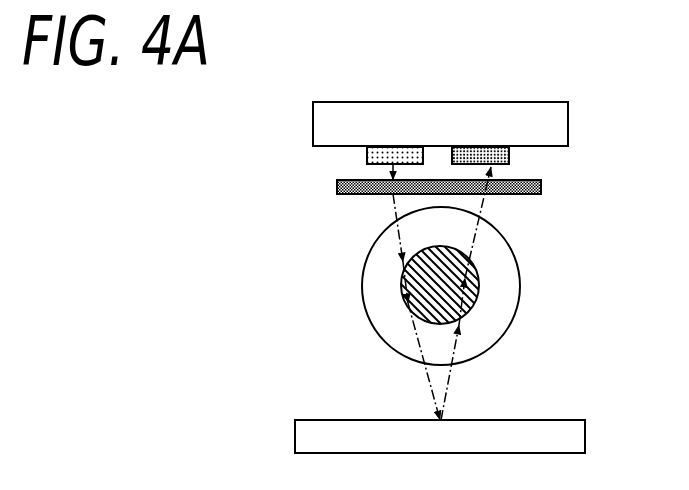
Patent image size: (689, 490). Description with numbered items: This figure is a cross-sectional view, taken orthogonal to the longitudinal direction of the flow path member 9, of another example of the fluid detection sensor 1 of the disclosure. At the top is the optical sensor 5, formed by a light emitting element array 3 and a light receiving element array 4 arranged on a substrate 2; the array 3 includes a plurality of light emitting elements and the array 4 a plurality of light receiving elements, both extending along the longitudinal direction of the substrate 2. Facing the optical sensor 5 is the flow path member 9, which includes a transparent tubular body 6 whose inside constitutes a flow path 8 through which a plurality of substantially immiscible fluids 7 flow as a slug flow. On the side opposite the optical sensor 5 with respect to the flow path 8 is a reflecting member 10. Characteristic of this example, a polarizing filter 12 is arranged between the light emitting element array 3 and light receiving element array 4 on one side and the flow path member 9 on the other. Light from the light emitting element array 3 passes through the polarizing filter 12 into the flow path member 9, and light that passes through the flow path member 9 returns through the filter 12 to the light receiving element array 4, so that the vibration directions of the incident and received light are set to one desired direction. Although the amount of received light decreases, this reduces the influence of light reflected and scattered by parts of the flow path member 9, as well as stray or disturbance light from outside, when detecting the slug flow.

The fluid detection sensor 1 is at (562, 80).
The substrate 2 is at (327, 117).
The light emitting element array 3 is at (395, 146).
The light receiving element array 4 is at (478, 146).
The optical sensor 5 is at (570, 123).
The tubular body 6 is at (378, 256).
The fluids 7 is at (425, 293).
The flow path 8 is at (403, 288).
The flow path member 9 is at (519, 272).
The reflecting member 10 is at (558, 418).
The polarizing filter 12 is at (567, 175).